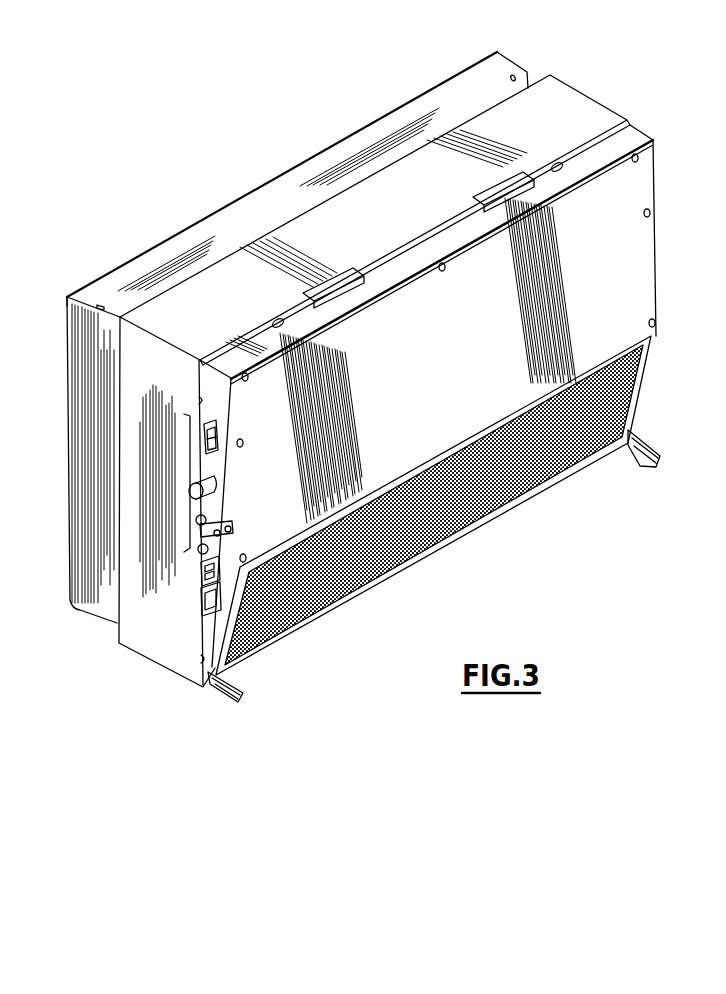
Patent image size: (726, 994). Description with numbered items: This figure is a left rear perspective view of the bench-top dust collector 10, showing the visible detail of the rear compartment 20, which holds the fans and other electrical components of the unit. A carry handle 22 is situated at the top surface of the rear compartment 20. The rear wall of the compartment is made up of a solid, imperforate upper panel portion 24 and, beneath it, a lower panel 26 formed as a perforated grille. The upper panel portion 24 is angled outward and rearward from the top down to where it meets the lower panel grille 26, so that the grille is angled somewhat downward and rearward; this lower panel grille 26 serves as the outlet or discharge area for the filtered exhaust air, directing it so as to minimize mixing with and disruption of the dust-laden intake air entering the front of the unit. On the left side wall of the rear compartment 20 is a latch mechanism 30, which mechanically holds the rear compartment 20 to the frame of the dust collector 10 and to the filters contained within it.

The bench-top dust collector 10 is at (160, 183).
The rear compartment 20 is at (627, 193).
The carry handle 22 is at (410, 231).
The upper panel portion 24 is at (590, 292).
The lower panel grille 26 is at (600, 462).
The latch mechanism 30 is at (190, 483).